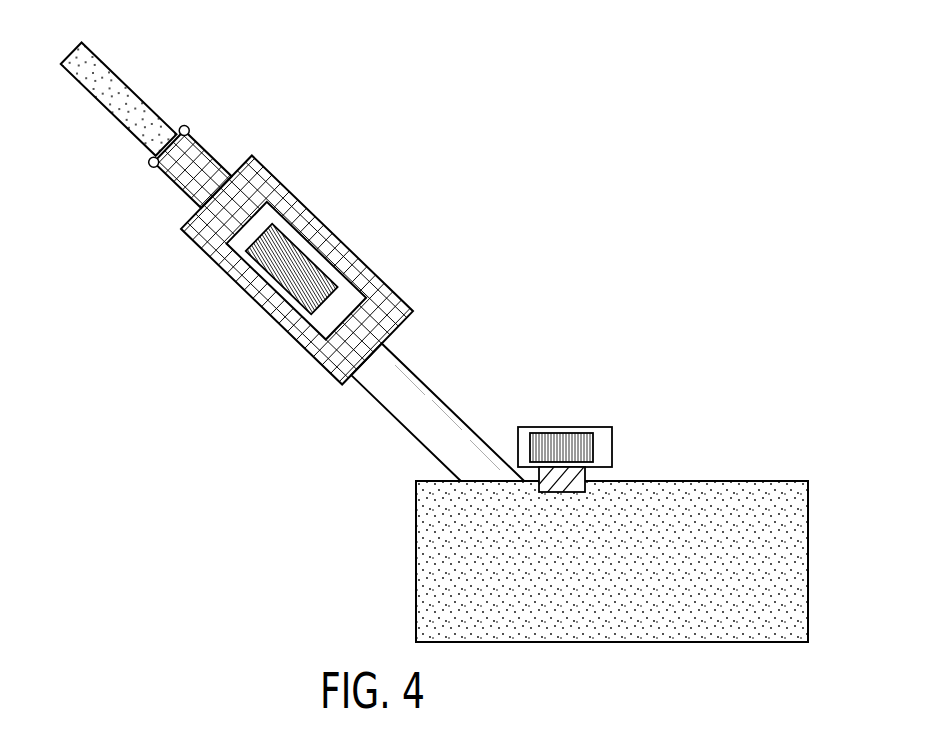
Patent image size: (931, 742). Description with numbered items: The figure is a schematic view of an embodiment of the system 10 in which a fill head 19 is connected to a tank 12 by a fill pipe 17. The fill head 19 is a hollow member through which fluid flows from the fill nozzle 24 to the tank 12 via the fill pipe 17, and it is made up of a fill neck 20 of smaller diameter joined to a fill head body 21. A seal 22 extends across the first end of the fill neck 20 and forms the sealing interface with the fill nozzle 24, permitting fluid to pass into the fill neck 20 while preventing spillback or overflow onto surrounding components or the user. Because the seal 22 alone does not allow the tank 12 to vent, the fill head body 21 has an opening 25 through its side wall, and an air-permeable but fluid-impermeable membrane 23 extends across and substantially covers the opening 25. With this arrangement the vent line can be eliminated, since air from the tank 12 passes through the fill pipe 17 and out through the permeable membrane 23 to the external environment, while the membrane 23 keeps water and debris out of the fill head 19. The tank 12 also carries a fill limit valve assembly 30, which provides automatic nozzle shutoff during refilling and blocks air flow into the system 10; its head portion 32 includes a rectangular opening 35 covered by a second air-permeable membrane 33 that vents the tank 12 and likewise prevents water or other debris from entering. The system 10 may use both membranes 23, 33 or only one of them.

The system 10 is at (633, 156).
The tank 12 is at (711, 480).
The fill pipe 17 is at (403, 413).
The fill head 19 is at (355, 222).
The fill neck 20 is at (200, 152).
The fill head body 21 is at (337, 352).
The seal 22 is at (148, 166).
The air-permeable membrane 23 is at (268, 266).
The fill nozzle 24 is at (120, 108).
The opening 25 is at (275, 298).
The fill limit valve assembly 30 is at (612, 374).
The head portion 32 is at (569, 431).
The air-permeable membrane 33 is at (545, 442).
The opening 35 is at (590, 441).